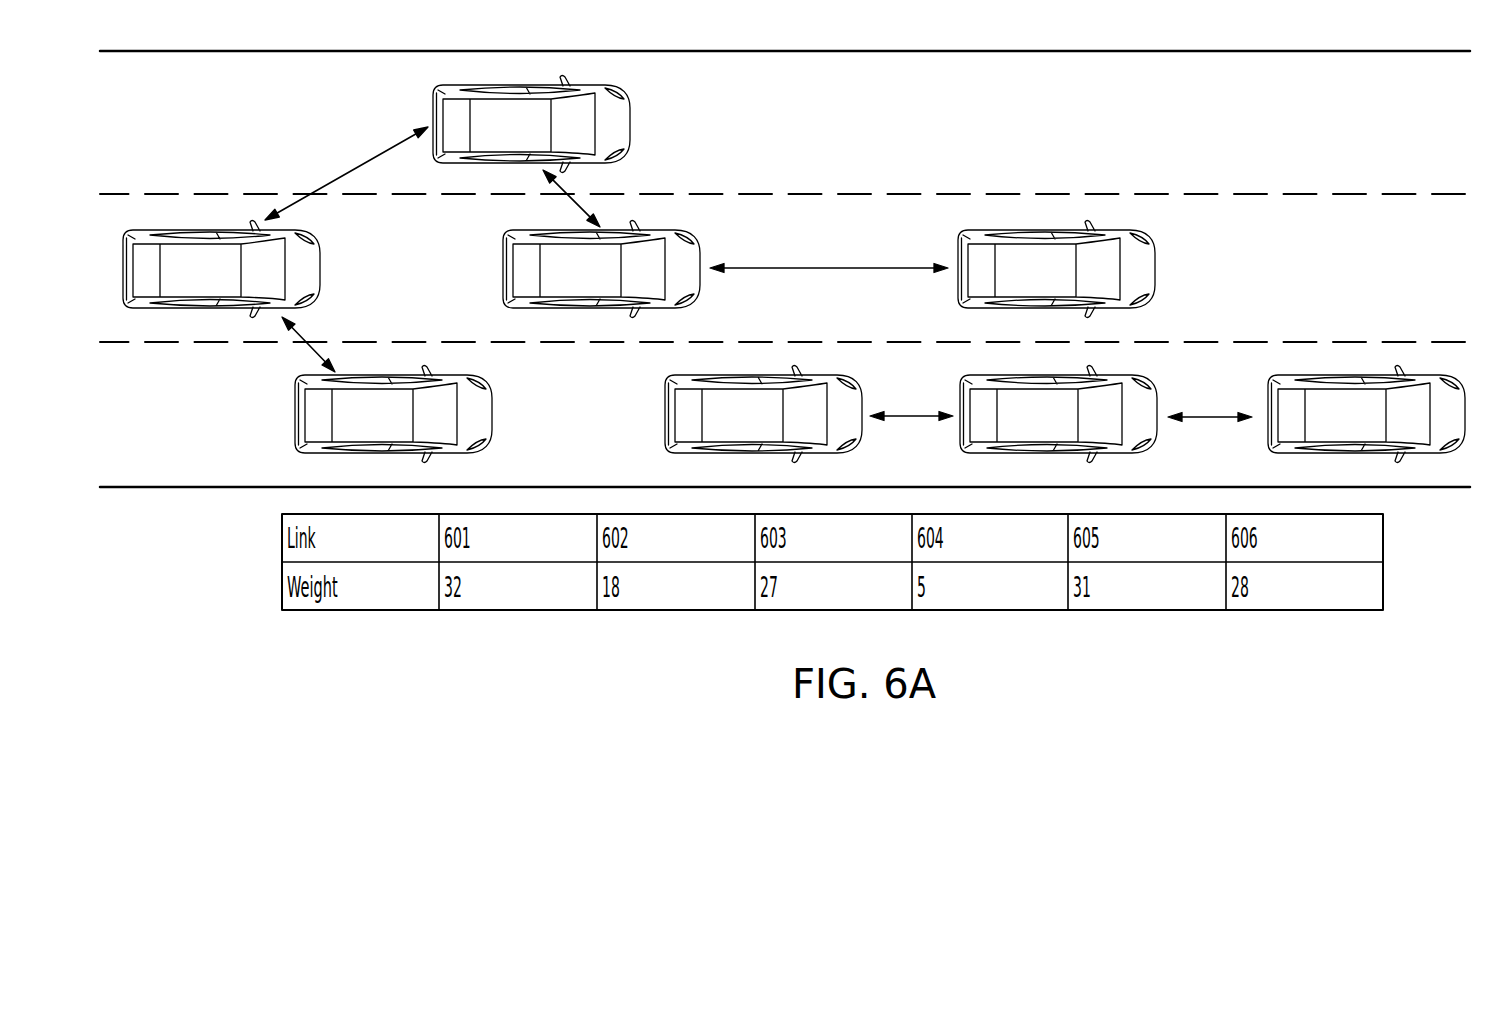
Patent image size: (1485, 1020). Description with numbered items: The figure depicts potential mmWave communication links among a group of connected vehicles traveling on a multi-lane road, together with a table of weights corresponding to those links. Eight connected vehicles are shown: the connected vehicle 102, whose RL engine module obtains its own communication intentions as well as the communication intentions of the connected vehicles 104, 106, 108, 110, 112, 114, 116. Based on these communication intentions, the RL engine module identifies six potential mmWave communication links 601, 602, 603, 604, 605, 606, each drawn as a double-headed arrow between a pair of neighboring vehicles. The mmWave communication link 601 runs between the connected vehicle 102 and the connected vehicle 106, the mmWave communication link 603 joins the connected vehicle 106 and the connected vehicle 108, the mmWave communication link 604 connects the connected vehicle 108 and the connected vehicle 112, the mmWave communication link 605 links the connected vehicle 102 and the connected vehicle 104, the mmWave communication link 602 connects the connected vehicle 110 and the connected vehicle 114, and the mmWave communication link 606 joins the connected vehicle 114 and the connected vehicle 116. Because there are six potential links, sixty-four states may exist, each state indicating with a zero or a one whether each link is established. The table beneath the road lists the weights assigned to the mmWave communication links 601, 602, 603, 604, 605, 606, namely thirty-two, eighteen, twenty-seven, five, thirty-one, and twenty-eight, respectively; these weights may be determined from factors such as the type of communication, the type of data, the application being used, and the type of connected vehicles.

The connected vehicle 102 is at (221, 269).
The connected vehicle 104 is at (393, 414).
The connected vehicle 106 is at (531, 124).
The connected vehicle 108 is at (601, 269).
The connected vehicle 110 is at (763, 414).
The connected vehicle 112 is at (1056, 269).
The connected vehicle 114 is at (1058, 414).
The connected vehicle 116 is at (1366, 414).
The mmWave communication link 601 is at (346, 168).
The mmWave communication link 602 is at (910, 414).
The mmWave communication link 603 is at (567, 204).
The mmWave communication link 604 is at (830, 265).
The mmWave communication link 605 is at (311, 350).
The mmWave communication link 606 is at (1212, 415).